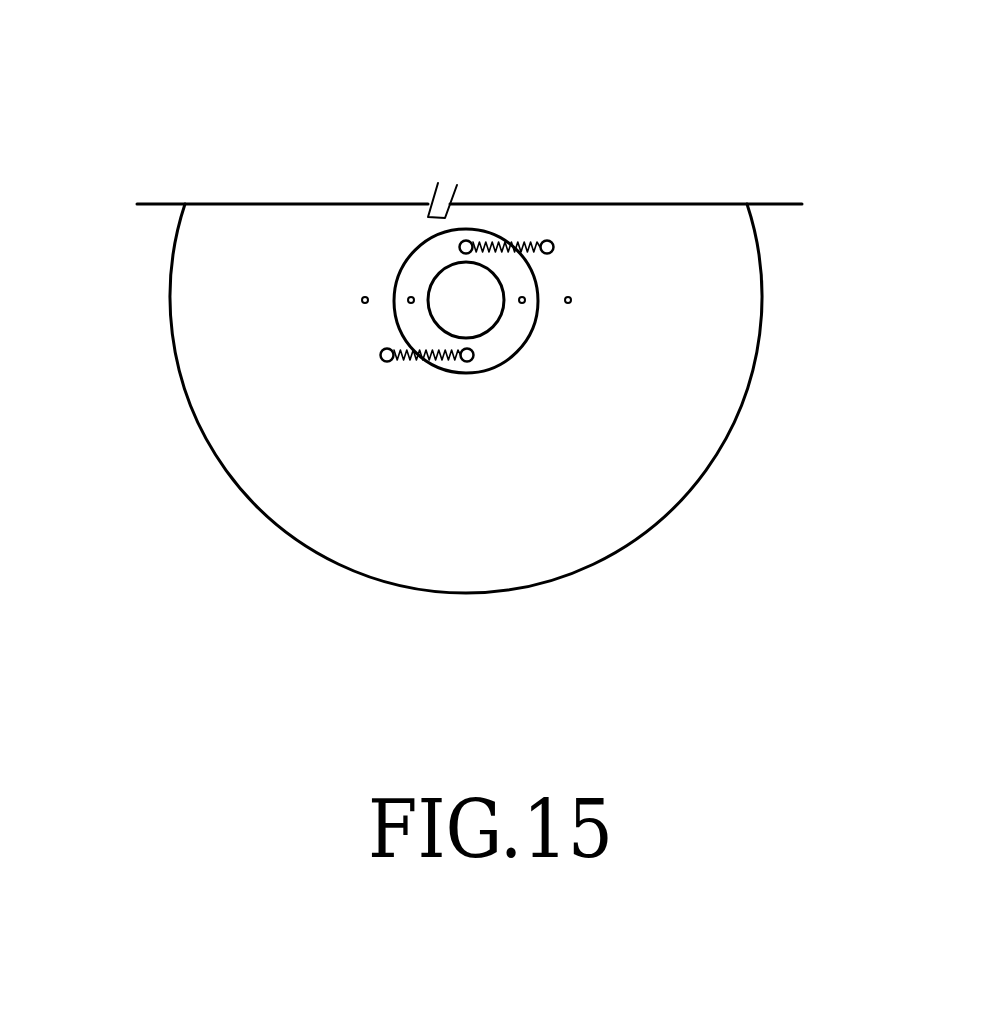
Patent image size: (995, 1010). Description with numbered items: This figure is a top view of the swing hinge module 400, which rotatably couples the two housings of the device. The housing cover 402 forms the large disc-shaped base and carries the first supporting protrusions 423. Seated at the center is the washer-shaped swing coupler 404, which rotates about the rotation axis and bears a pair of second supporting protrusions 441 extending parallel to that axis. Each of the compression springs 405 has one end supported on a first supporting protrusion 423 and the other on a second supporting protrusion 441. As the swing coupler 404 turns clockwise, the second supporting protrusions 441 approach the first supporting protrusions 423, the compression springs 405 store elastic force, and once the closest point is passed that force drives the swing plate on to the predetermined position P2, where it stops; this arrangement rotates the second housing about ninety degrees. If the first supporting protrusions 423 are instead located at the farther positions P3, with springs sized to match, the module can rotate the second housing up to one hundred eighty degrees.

The swing hinge module 400 is at (102, 42).
The housing cover 402 is at (643, 463).
The swing coupler 404 is at (423, 257).
The compression springs 405 is at (532, 270).
The second supporting protrusions 441 is at (469, 241).
The first supporting protrusions 423 is at (556, 247).
The predetermined position P2 is at (409, 297).
The farther positions of first supporting protrusions P3 is at (361, 300).